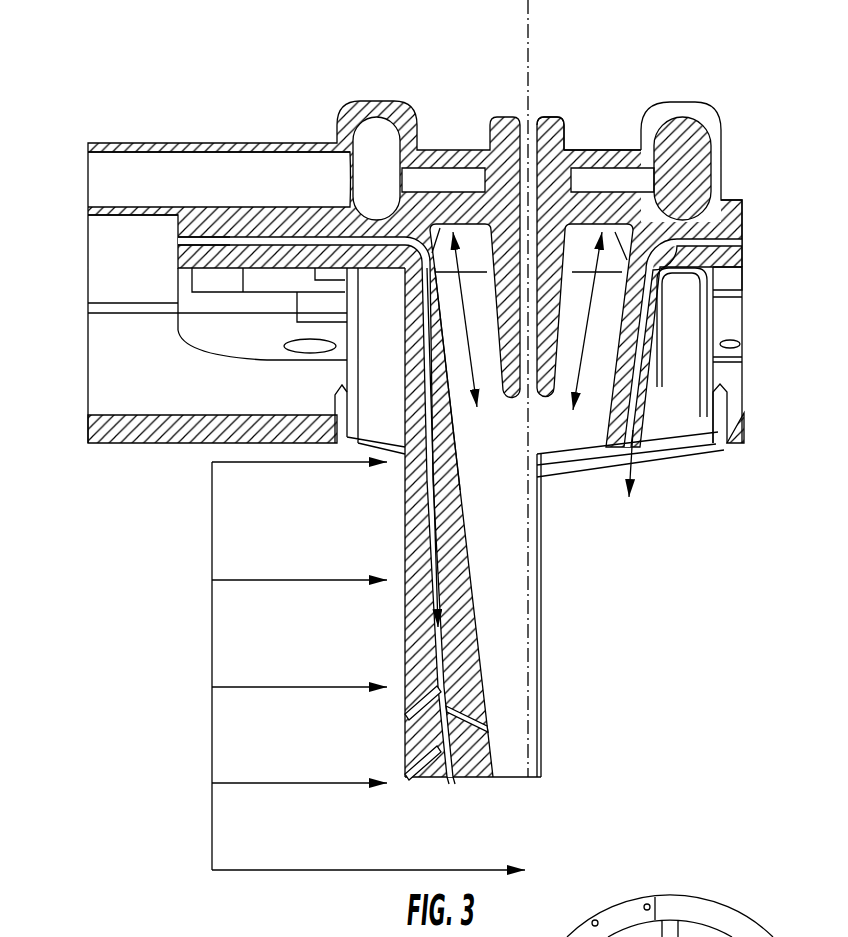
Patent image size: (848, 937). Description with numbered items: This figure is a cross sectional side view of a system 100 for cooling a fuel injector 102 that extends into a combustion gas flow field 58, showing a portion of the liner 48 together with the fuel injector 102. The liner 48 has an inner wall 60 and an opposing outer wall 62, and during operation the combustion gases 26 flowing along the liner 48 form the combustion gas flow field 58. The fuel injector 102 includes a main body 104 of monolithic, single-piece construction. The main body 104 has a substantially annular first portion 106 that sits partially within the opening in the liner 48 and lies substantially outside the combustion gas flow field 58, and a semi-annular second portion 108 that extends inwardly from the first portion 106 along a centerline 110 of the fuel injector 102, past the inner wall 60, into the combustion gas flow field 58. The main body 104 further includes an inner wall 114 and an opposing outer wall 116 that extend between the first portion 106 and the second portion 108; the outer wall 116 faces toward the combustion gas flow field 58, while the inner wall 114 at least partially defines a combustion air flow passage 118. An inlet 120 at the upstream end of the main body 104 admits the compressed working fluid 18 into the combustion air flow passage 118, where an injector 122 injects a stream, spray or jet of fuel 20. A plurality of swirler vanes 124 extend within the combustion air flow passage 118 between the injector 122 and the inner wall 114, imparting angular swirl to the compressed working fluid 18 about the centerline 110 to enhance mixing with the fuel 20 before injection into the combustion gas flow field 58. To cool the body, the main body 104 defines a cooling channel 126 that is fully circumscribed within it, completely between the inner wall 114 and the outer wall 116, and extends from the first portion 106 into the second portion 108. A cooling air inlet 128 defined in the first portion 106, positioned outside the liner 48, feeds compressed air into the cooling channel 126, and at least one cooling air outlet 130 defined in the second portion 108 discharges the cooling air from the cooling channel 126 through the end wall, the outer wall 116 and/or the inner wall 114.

The compressed working fluid 18 is at (450, 128).
The fuel 20 is at (290, 185).
The combustion gases 26 is at (305, 463).
The liner 48 is at (123, 427).
The combustion gas flow field 58 is at (212, 637).
The inner wall 60 is at (744, 452).
The outer wall 62 is at (744, 397).
The system 100 is at (713, 38).
The fuel injector 102 is at (711, 117).
The main body 104 is at (734, 230).
The first portion 106 is at (647, 393).
The second portion 108 is at (514, 567).
The centerline 110 is at (530, 45).
The inner wall 114 is at (437, 330).
The outer wall 116 is at (407, 597).
The combustion air flow passage 118 is at (480, 385).
The inlet 120 is at (603, 128).
The injector 122 is at (564, 115).
The swirler vanes 124 is at (473, 257).
The cooling channel 126 is at (273, 242).
The cooling air inlet 128 is at (177, 244).
The cooling air outlet 130 is at (410, 713).